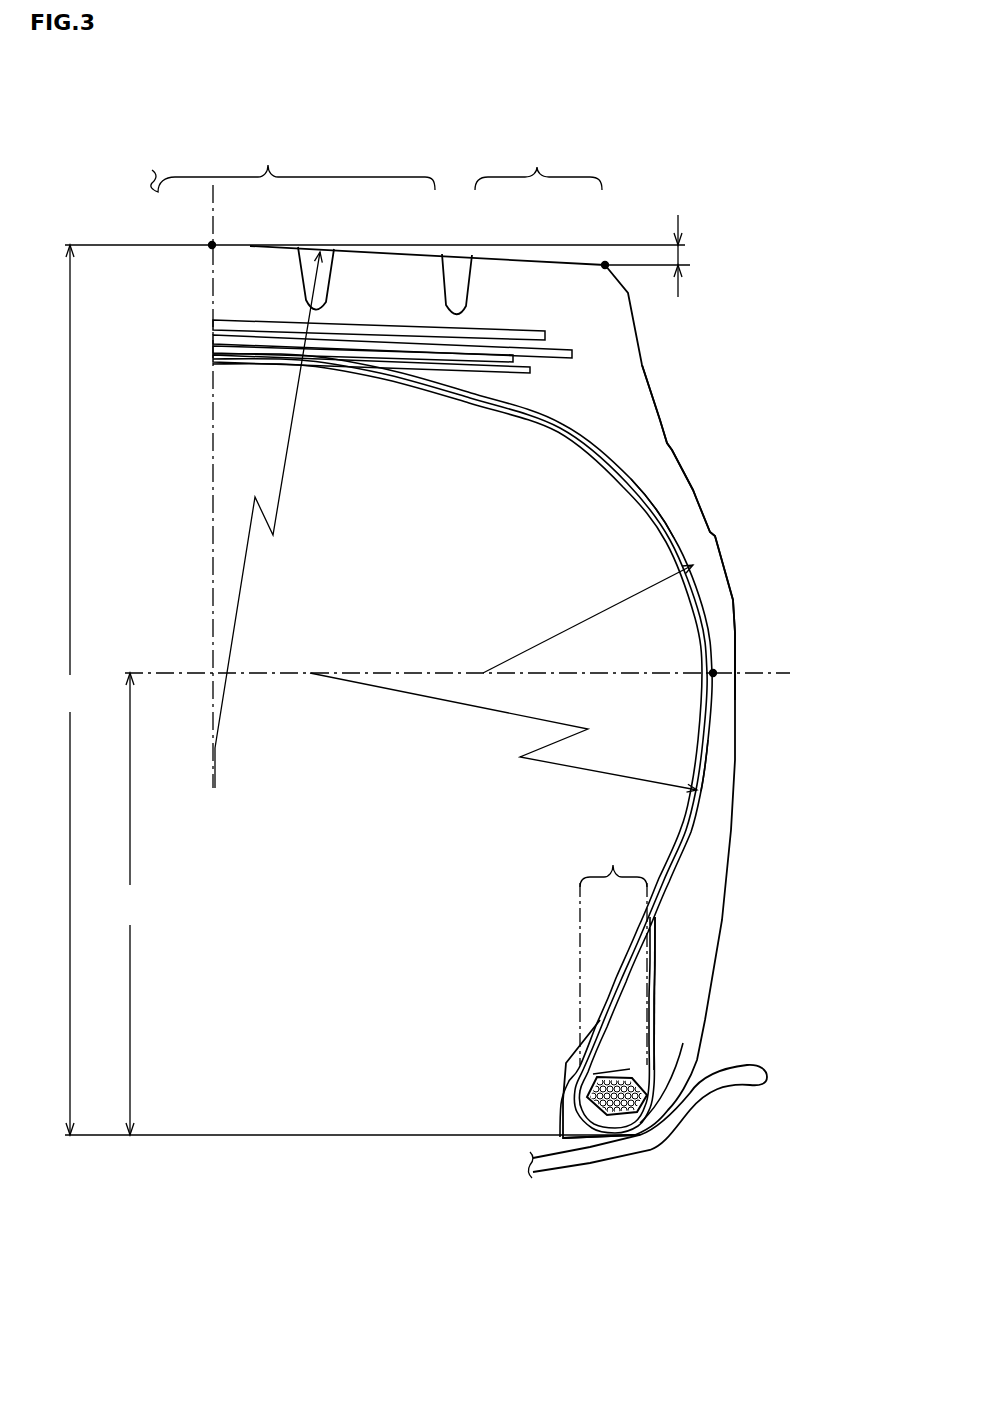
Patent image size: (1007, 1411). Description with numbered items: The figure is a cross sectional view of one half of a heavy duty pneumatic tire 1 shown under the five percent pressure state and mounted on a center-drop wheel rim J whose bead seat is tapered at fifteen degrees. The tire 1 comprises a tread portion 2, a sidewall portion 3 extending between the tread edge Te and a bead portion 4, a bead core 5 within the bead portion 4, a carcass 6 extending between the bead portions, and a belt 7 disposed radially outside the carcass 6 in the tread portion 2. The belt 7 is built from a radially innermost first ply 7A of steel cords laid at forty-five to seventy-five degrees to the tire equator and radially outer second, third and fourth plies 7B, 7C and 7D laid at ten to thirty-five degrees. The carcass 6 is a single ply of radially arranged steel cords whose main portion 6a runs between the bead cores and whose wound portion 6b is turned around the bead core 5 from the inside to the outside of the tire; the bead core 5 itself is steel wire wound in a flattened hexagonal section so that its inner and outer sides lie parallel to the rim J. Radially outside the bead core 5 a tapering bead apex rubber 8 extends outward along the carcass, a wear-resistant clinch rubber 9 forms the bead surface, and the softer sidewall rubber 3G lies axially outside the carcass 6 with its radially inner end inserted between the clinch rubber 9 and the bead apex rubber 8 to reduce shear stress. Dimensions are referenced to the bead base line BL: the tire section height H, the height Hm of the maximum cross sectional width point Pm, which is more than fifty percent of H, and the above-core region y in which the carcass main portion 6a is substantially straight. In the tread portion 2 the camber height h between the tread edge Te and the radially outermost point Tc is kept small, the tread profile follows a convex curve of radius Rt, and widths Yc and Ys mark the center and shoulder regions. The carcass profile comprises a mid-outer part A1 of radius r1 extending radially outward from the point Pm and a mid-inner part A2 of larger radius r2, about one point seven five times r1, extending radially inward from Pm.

The pneumatic tire 1 is at (680, 392).
The tread portion 2 is at (413, 277).
The sidewall portion 3 is at (748, 567).
The sidewall rubber 3G is at (683, 965).
The bead portion 4 is at (553, 1105).
The bead core 5 is at (605, 1125).
The carcass 6 is at (712, 725).
The carcass main portion 6a is at (620, 993).
The carcass wound portion 6b is at (610, 1060).
The belt 7 is at (125, 290).
The first belt ply 7A is at (213, 358).
The second belt ply 7B is at (213, 348).
The third belt ply 7C is at (213, 337).
The fourth belt ply 7D is at (213, 322).
The bead apex rubber 8 is at (640, 1025).
The clinch rubber 9 is at (668, 1100).
The wheel rim J is at (545, 1175).
The tire section height H is at (372, 690).
The radial height of maximum width point Hm is at (130, 904).
The bead base line BL is at (262, 1140).
The camber height h is at (653, 256).
The radially outermost point of tread face Tc is at (211, 243).
The tread edge Te is at (607, 263).
The maximum cross sectional width point Pm is at (713, 673).
The tread center region width Yc is at (293, 162).
The tread shoulder region width Ys is at (538, 161).
The above-core region y is at (613, 951).
The tread profile radius of curvature Rt is at (289, 449).
The radius of curvature of mid-outer part r1 is at (592, 612).
The radius of curvature of mid-inner part r2 is at (630, 777).
The mid-outer part A1 is at (678, 530).
The mid-inner part A2 is at (707, 763).